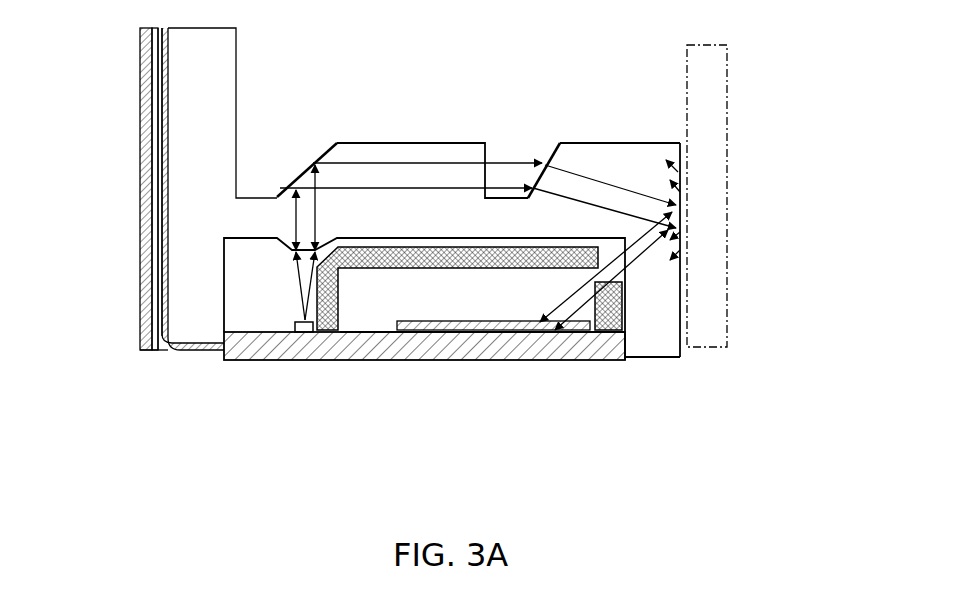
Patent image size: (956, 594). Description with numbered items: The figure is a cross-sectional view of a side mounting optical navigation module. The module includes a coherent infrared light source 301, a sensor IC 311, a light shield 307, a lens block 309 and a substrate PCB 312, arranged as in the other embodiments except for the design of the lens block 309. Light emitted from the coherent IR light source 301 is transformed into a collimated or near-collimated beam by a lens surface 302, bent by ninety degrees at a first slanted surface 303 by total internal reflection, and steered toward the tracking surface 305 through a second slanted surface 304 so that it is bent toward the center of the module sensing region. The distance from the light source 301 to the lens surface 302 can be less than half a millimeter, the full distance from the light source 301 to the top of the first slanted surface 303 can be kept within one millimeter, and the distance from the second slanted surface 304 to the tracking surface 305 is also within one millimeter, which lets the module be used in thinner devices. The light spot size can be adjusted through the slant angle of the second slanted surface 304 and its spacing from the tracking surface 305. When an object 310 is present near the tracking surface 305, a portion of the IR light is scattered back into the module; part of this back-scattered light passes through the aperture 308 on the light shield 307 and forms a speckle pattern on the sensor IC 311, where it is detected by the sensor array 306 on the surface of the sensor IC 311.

The coherent infrared light source 301 is at (297, 362).
The lens surface 302 is at (270, 244).
The first slanted surface 303 is at (308, 155).
The second slanted surface 304 is at (552, 157).
The tracking surface 305 is at (677, 155).
The sensor array 306 is at (582, 360).
The light shield 307 is at (432, 247).
The aperture 308 is at (625, 272).
The lens block 309 is at (450, 152).
The object 310 is at (718, 198).
The sensor IC 311 is at (405, 328).
The substrate PCB 312 is at (492, 336).